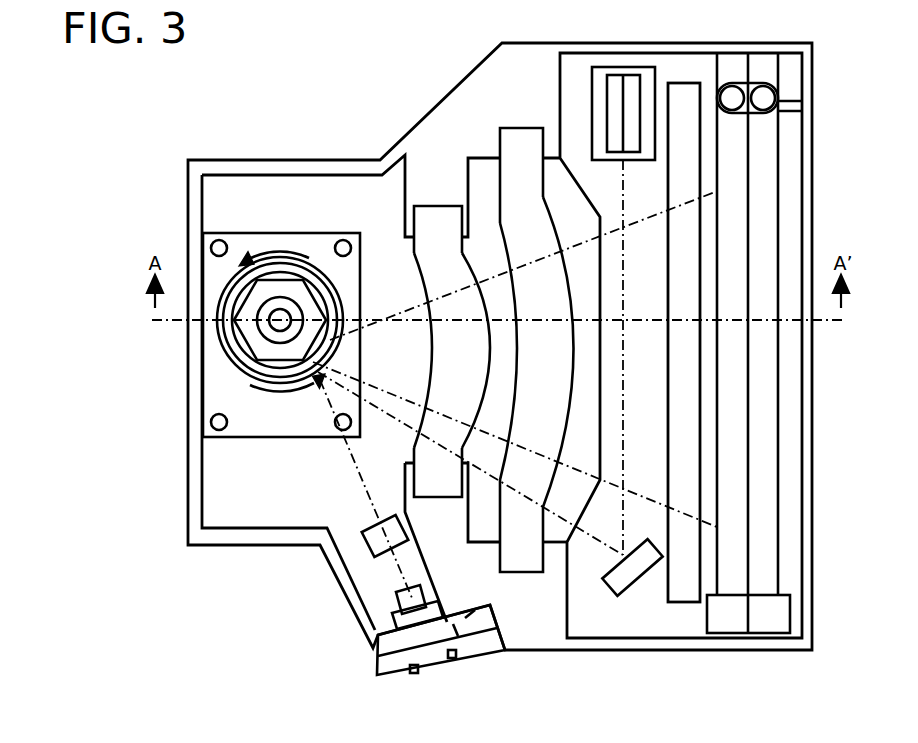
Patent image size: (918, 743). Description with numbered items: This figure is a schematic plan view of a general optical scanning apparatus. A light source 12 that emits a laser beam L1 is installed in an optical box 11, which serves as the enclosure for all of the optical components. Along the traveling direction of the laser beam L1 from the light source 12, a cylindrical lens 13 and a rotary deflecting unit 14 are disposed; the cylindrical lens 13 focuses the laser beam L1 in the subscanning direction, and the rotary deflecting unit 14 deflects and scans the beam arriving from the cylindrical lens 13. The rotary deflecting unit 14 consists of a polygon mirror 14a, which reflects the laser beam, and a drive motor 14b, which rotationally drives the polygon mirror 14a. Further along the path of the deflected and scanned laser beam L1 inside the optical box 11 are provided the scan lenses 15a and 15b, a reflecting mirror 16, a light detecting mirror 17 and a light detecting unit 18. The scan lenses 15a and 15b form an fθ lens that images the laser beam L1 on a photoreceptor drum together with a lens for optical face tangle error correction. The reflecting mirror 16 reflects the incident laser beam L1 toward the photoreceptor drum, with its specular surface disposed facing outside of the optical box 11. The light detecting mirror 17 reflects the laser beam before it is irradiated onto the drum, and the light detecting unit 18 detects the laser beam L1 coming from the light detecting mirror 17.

The optical box 11 is at (188, 503).
The light source 12 is at (439, 603).
The cylindrical lens 13 is at (372, 524).
The rotary deflecting unit 14 is at (128, 333).
The polygon mirror 14a is at (256, 344).
The drive motor 14b is at (263, 377).
The scan lens 15a is at (440, 206).
The scan lens 15b is at (521, 128).
The reflecting mirror 16 is at (748, 152).
The light detecting mirror 17 is at (638, 583).
The light detecting unit 18 is at (623, 67).
The laser beam L1 is at (648, 221).